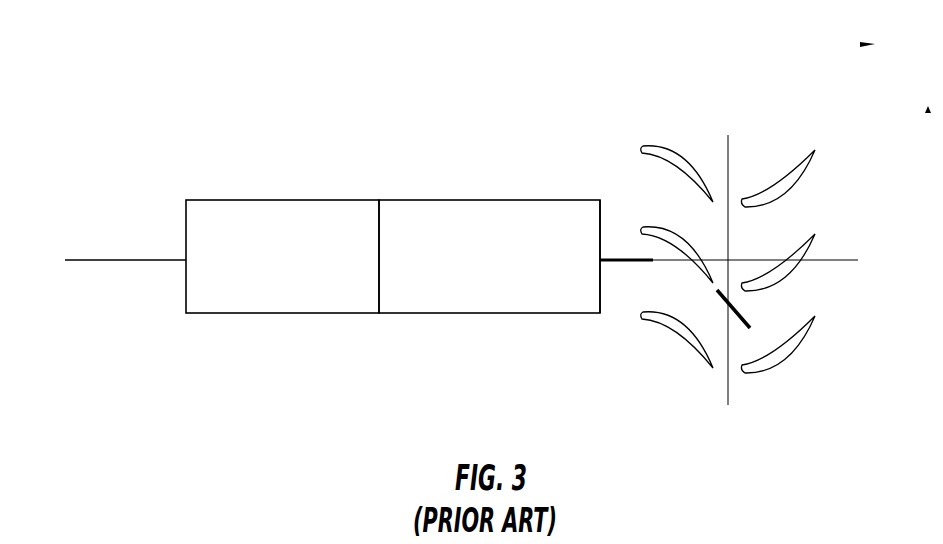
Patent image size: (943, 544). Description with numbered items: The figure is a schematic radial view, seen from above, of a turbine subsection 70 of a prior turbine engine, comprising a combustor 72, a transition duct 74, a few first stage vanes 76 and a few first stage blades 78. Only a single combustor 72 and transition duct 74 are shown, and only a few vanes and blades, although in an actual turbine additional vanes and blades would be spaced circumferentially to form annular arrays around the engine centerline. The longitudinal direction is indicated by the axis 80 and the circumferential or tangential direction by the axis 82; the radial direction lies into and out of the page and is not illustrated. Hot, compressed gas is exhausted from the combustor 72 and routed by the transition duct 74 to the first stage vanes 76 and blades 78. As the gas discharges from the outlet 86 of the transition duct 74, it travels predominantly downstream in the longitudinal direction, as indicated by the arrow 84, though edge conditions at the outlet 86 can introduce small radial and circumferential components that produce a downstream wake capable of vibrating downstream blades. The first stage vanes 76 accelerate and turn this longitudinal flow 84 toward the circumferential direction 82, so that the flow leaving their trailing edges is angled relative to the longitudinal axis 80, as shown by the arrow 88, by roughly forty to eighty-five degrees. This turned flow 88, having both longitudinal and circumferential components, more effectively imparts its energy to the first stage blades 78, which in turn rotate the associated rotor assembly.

The turbine subsection 70 is at (561, 105).
The combustor 72 is at (244, 200).
The transition duct 74 is at (427, 200).
The first stage vanes 76 is at (690, 140).
The first stage blades 78 is at (762, 157).
The longitudinal axis 80 is at (771, 263).
The circumferential axis 82 is at (725, 289).
The longitudinal gas flow arrow 84 is at (625, 262).
The transition duct outlet 86 is at (600, 225).
The turned gas flow arrow 88 is at (727, 305).